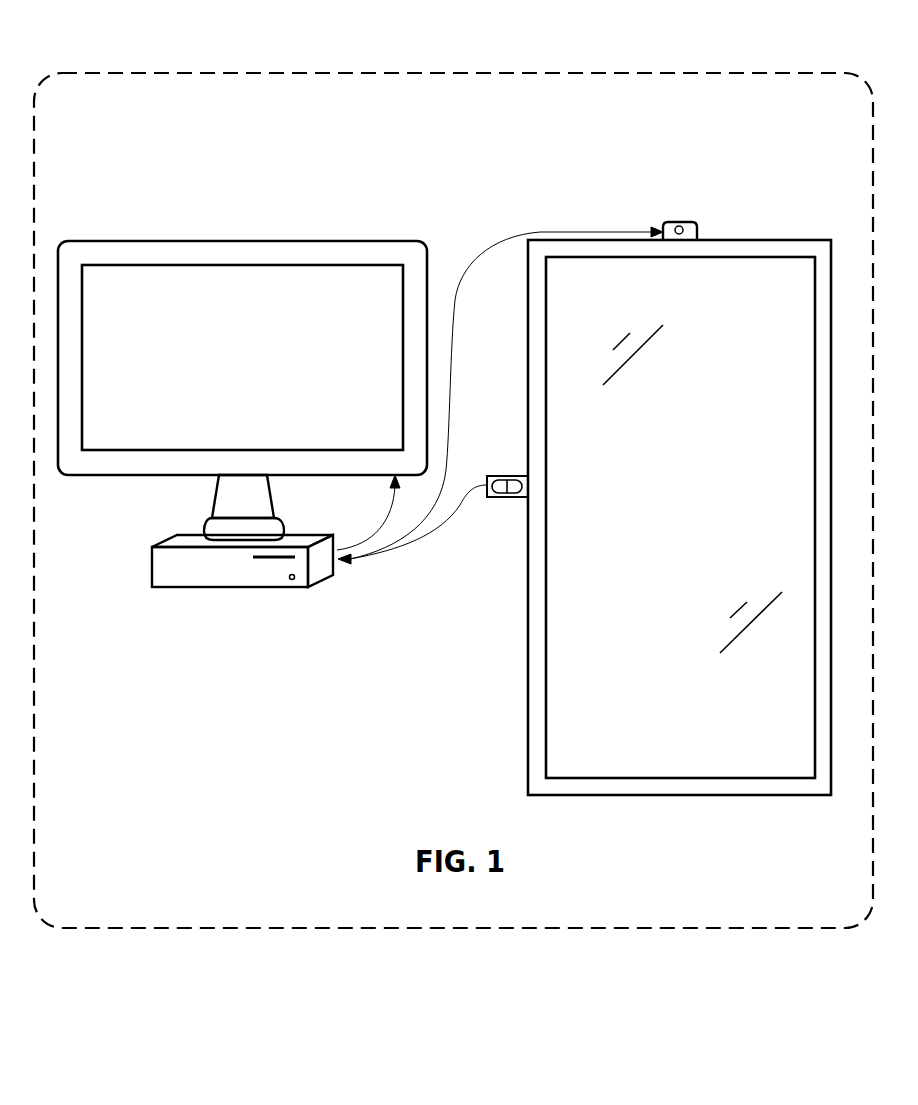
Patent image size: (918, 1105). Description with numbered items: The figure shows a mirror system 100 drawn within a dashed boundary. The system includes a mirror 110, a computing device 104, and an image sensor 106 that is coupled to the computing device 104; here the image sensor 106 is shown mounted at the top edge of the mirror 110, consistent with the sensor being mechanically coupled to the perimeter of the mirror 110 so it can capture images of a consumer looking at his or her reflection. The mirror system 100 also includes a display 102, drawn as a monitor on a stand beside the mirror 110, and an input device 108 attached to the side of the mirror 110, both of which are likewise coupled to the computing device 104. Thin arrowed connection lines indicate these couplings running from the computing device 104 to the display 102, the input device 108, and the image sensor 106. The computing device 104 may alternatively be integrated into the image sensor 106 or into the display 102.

The mirror system 100 is at (360, 73).
The display 102 is at (93, 241).
The computing device 104 is at (152, 556).
The image sensor 106 is at (679, 222).
The input device 108 is at (520, 497).
The mirror 110 is at (797, 240).